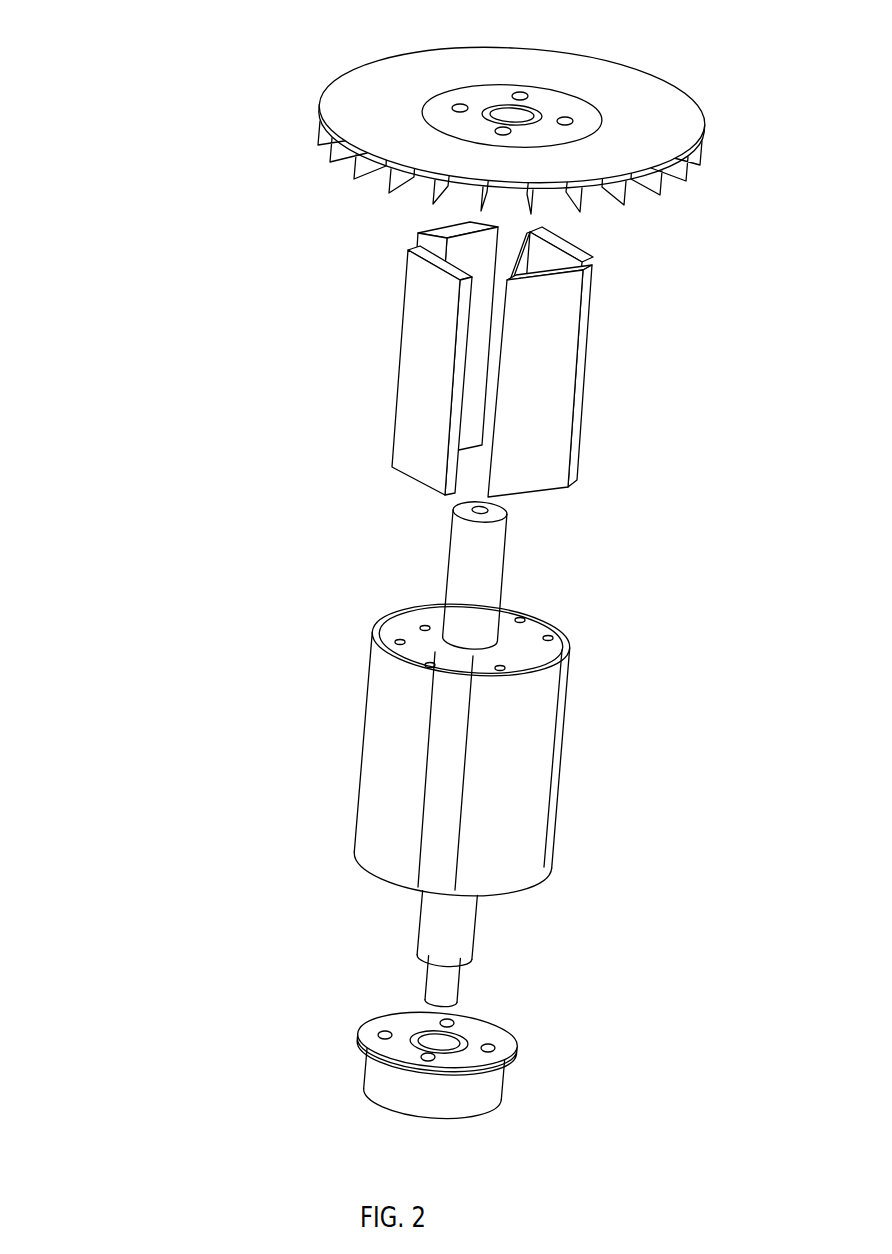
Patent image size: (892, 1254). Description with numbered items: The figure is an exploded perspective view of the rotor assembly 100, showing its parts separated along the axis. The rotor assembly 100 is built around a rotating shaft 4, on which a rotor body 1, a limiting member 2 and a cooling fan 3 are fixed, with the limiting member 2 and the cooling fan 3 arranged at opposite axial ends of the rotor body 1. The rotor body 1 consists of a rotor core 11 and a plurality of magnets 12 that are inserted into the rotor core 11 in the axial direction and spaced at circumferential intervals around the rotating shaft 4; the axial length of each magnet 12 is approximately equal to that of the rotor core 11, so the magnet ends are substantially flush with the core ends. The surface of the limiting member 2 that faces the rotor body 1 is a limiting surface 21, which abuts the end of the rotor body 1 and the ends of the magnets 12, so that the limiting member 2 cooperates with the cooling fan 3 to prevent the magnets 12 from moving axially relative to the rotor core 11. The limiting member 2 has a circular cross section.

The rotor assembly 100 is at (82, 36).
The cooling fan 3 is at (337, 108).
The rotor body 1 is at (262, 670).
The magnets 12 is at (410, 393).
The rotor core 11 is at (377, 753).
The rotating shaft 4 is at (435, 923).
The limiting member 2 is at (375, 1068).
The limiting surface 21 is at (400, 1025).